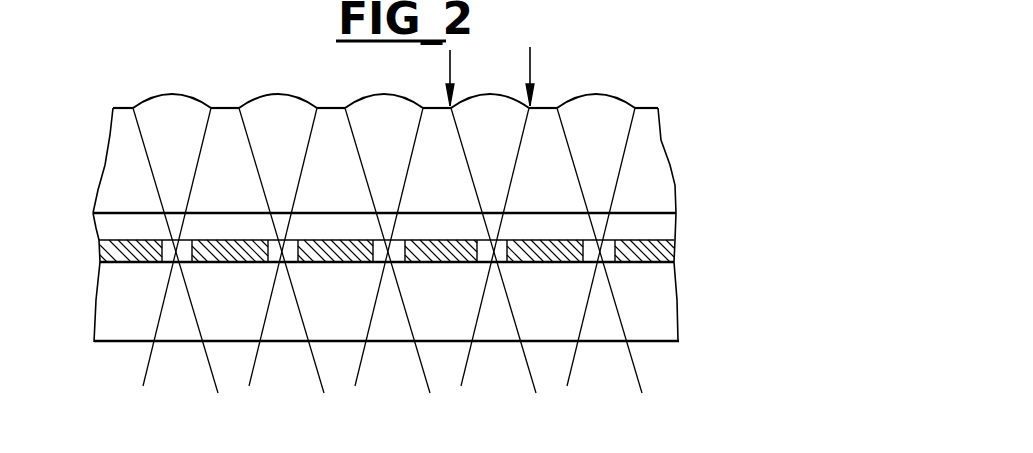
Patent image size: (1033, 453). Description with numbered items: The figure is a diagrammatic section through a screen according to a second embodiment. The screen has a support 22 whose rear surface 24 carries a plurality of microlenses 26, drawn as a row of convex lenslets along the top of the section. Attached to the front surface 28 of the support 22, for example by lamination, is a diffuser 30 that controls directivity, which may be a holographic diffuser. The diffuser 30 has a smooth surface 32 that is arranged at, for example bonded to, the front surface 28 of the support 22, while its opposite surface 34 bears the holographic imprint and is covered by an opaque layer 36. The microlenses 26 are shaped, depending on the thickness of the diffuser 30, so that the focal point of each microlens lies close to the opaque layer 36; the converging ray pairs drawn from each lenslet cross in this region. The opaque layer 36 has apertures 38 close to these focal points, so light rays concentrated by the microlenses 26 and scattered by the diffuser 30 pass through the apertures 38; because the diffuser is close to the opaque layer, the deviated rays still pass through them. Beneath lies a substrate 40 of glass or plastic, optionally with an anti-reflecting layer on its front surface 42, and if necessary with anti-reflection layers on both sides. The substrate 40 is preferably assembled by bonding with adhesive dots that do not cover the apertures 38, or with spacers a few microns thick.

The support 22 is at (110, 160).
The rear surface 24 is at (122, 107).
The microlenses 26 is at (186, 97).
The front surface 28 is at (645, 210).
The diffuser 30 is at (664, 225).
The smooth surface 32 is at (95, 214).
The surface of diffuser 34 is at (100, 248).
The opaque layer 36 is at (663, 249).
The apertures 38 is at (603, 264).
The substrate 40 is at (105, 302).
The front surface of substrate 42 is at (655, 342).